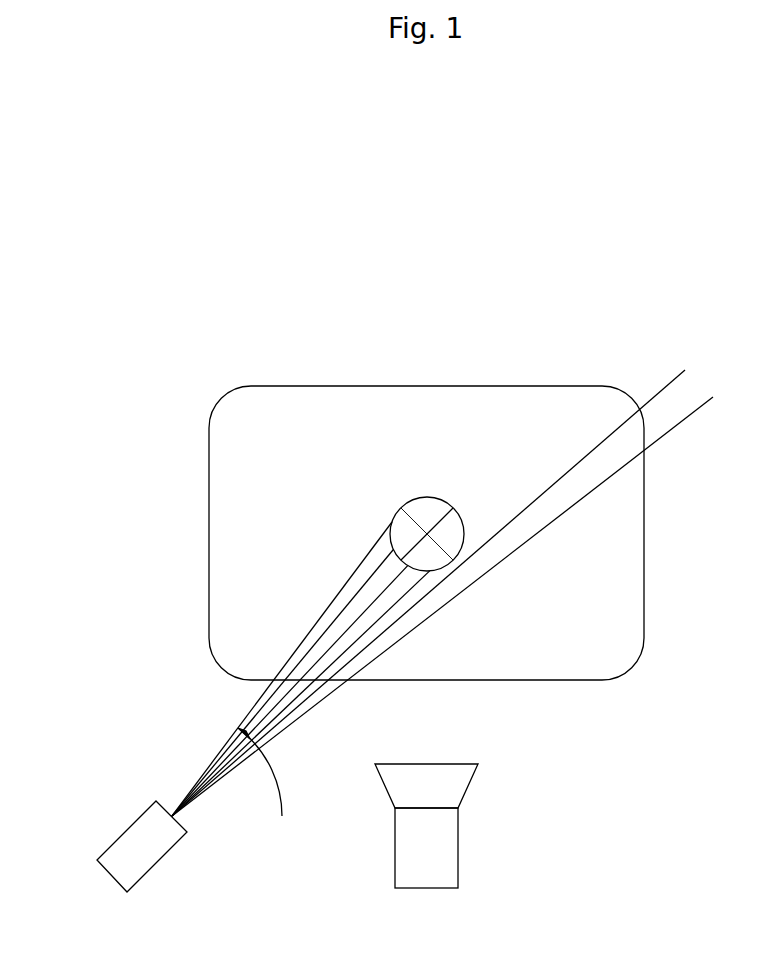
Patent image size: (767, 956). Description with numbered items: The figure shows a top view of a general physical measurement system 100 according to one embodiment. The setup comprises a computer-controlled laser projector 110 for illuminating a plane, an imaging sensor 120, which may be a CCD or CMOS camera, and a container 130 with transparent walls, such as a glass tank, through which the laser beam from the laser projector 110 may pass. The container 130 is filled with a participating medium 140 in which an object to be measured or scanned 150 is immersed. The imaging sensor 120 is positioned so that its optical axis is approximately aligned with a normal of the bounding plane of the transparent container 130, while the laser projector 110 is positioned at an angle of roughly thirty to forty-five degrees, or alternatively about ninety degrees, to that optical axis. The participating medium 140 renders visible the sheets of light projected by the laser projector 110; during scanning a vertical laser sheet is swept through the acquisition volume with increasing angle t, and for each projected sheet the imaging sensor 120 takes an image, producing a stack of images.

The measurement system 100 is at (97, 342).
The laser projector 110 is at (127, 830).
The imaging sensor 120 is at (458, 847).
The container 130 is at (644, 534).
The participating medium 140 is at (315, 451).
The object to be measured 150 is at (423, 497).